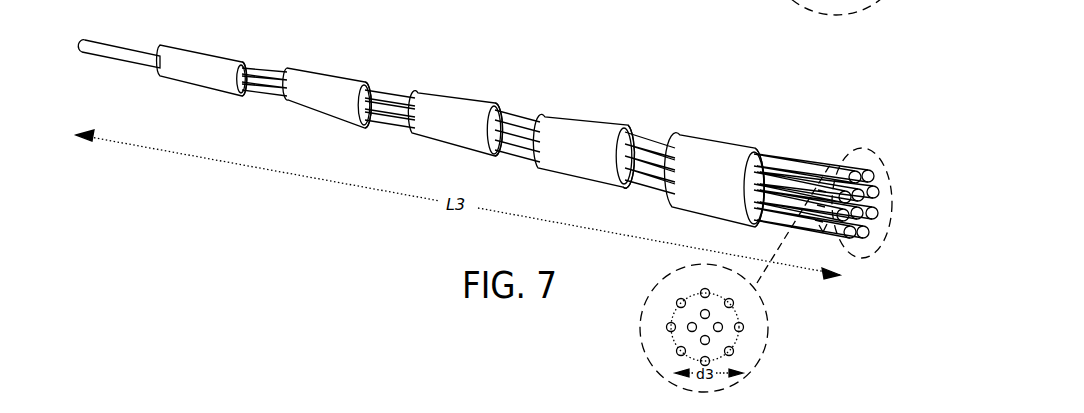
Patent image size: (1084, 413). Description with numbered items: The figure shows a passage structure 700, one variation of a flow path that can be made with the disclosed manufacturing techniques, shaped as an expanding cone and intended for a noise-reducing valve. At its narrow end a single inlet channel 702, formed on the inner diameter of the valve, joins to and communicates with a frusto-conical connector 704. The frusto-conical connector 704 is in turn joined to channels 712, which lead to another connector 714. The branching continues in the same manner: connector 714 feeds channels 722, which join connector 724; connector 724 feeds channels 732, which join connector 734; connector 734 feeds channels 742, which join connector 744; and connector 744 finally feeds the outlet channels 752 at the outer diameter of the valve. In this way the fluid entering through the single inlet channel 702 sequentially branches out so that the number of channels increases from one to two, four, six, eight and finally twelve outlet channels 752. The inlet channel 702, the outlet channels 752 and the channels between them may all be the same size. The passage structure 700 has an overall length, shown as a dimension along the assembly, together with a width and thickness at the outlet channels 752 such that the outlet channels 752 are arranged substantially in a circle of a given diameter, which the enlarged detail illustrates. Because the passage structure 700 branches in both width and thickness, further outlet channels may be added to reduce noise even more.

The passage structure 700 is at (473, 88).
The inlet channel 702 is at (108, 51).
The frusto-conical connector 704 is at (188, 77).
The channels 712 is at (267, 72).
The connector 714 is at (302, 102).
The channels 722 is at (390, 97).
The connector 724 is at (432, 137).
The channels 732 is at (523, 113).
The connector 734 is at (555, 163).
The channels 742 is at (653, 143).
The connector 744 is at (687, 195).
The outlet channels 752 is at (802, 162).